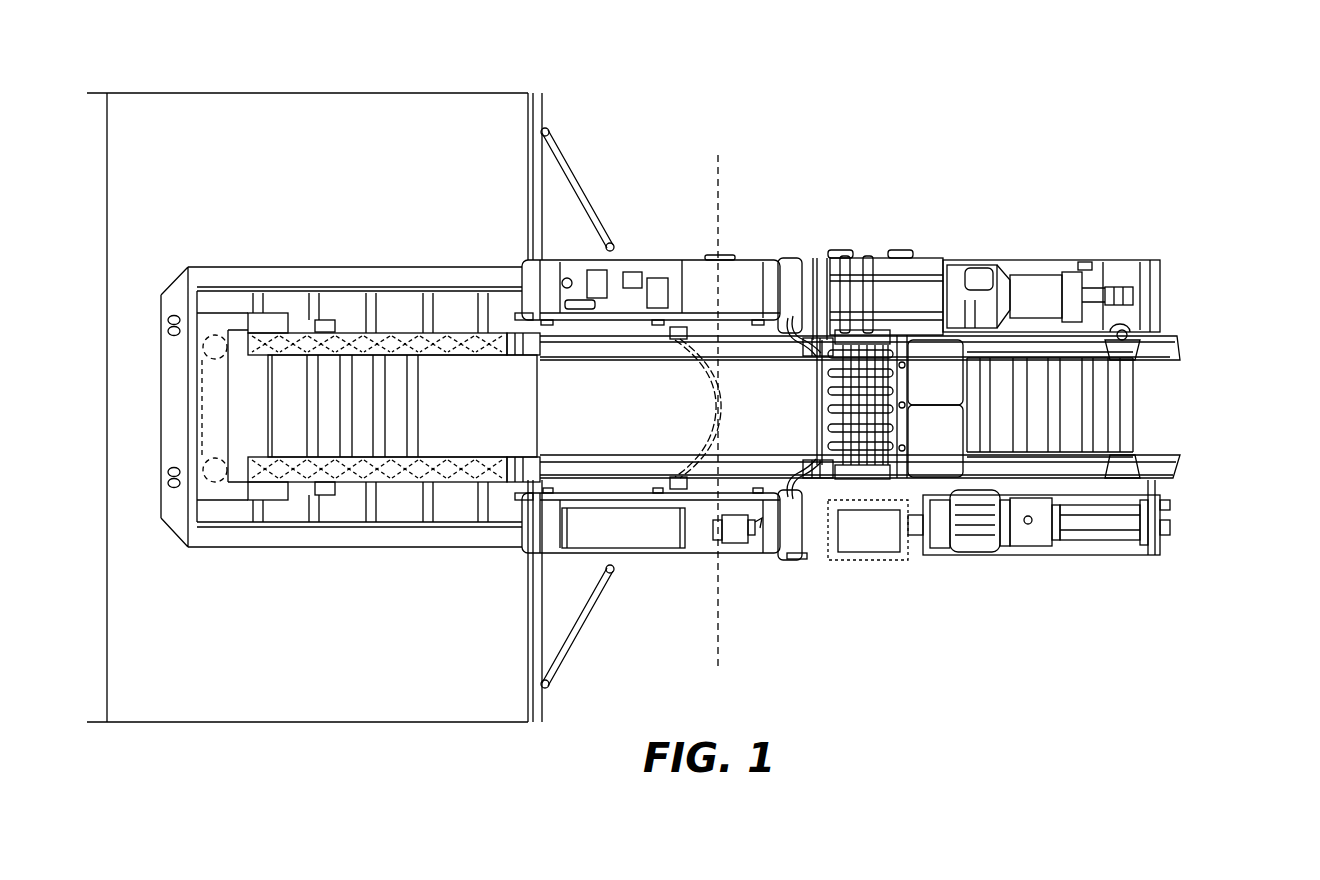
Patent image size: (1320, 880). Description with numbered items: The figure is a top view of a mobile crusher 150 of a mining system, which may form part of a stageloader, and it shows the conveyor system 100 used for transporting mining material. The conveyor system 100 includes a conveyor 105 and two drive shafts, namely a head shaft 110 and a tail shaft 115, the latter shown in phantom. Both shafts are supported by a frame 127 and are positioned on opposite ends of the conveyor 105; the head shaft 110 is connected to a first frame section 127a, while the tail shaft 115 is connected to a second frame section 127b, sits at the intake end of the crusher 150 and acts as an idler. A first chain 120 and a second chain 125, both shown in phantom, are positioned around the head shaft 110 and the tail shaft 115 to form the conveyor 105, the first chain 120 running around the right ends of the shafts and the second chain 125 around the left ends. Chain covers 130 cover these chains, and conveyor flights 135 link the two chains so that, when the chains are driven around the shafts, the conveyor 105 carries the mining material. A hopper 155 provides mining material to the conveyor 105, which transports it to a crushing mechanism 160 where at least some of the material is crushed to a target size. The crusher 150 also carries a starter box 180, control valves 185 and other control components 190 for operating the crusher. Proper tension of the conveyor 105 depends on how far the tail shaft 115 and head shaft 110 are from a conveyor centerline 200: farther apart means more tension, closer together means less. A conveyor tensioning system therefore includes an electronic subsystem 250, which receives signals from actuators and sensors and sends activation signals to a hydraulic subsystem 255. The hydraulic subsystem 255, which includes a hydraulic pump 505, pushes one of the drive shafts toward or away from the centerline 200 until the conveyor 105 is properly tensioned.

The conveyor system 100 is at (1076, 250).
The conveyor 105 is at (475, 372).
The head shaft 110 is at (1150, 530).
The tail shaft 115 is at (215, 478).
The first chain 120 is at (300, 335).
The second chain 125 is at (385, 470).
The frame 127 is at (740, 474).
The first frame section 127a is at (1180, 480).
The second frame section 127b is at (285, 537).
The chain covers 130 is at (408, 335).
The conveyor flights 135 is at (347, 452).
The crusher 150 is at (1032, 100).
The hopper 155 is at (107, 405).
The crushing mechanism 160 is at (815, 320).
The starter box 180 is at (652, 540).
The control valves 185 is at (745, 552).
The control components 190 is at (595, 272).
The conveyor centerline 200 is at (715, 648).
The electronic subsystem 250 is at (660, 268).
The hydraulic subsystem 255 is at (1230, 245).
The hydraulic pump 505 is at (1137, 297).